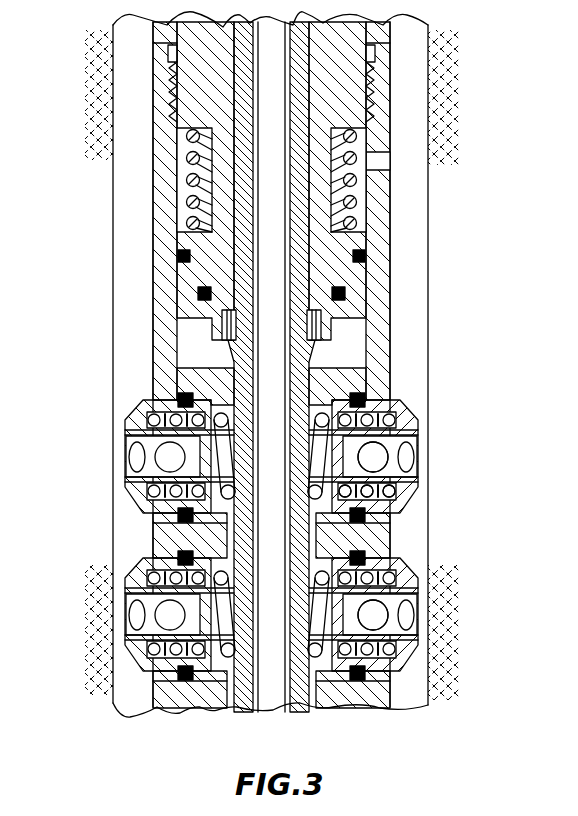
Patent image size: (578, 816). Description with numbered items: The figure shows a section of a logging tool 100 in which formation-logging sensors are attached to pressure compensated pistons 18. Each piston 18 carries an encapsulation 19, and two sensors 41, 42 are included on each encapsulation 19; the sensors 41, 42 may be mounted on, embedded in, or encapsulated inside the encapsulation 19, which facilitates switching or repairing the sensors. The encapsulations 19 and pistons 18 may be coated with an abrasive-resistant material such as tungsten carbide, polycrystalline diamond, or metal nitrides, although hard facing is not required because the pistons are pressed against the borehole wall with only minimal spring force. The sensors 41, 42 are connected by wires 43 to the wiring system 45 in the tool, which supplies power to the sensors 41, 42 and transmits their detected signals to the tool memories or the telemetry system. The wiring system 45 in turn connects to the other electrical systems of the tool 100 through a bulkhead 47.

The logging tool 100 is at (325, 364).
The bulkhead 47 is at (368, 330).
The wiring system 45 is at (368, 380).
The wires 43 is at (402, 425).
The sensor 41 is at (373, 460).
The sensor 42 is at (417, 490).
The pressure compensated pistons 18 is at (418, 587).
The encapsulation 19 is at (418, 632).